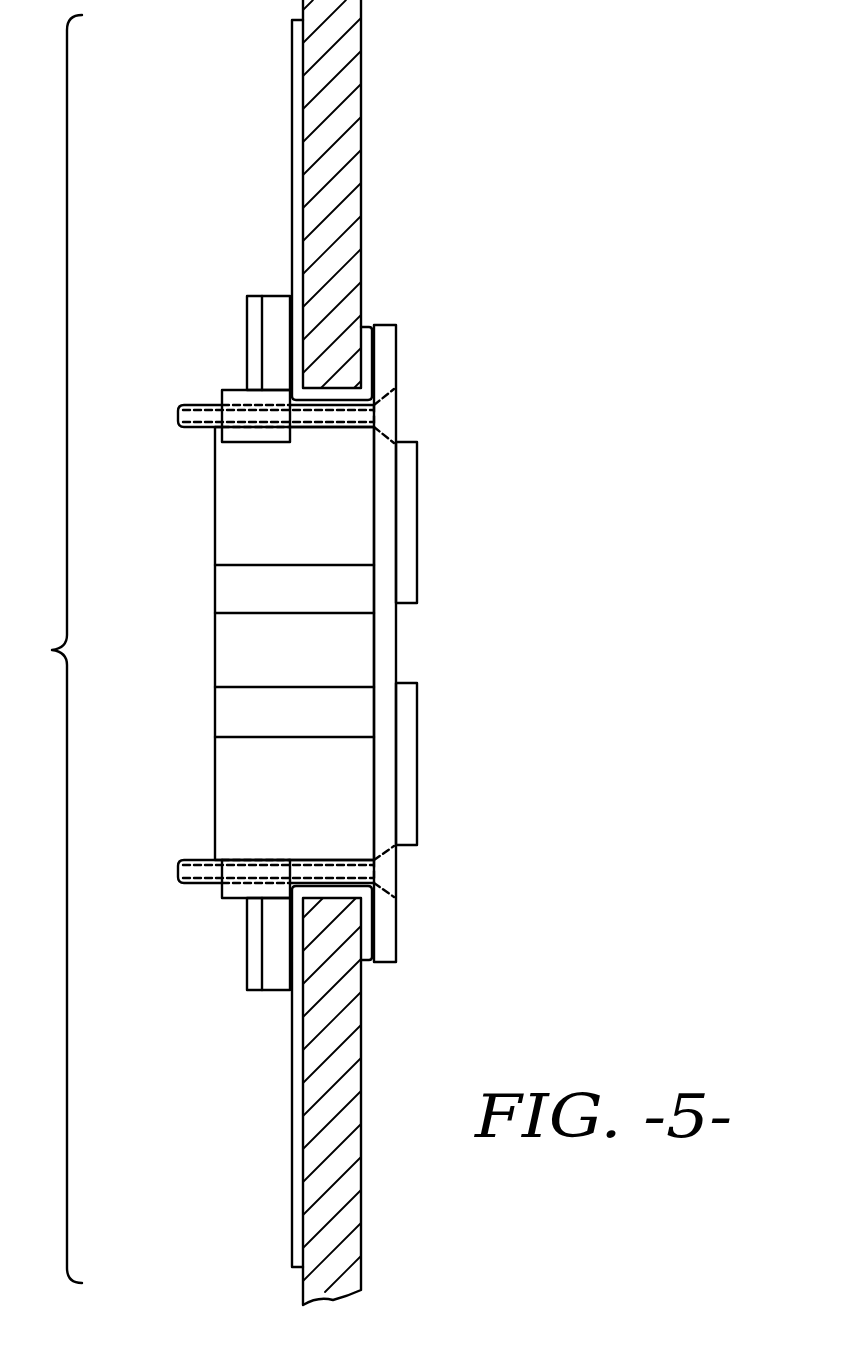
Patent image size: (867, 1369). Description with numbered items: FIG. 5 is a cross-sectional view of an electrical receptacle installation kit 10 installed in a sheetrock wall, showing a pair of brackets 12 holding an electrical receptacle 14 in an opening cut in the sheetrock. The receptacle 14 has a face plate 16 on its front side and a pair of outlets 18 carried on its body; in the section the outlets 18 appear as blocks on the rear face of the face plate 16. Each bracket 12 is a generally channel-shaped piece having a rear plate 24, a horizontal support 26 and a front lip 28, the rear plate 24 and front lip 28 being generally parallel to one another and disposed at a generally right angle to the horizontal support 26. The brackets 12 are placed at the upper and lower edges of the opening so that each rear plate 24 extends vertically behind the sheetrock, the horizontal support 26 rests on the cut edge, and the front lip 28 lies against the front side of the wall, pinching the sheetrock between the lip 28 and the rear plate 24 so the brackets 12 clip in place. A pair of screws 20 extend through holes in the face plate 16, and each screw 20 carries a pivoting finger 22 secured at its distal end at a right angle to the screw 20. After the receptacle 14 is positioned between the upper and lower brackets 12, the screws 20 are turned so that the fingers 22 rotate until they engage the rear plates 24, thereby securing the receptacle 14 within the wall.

The electrical receptacle installation kit 10 is at (47, 649).
The bracket 12 is at (300, 68).
The electrical receptacle 14 is at (243, 490).
The face plate 16 is at (385, 355).
The outlet 18 is at (407, 497).
The screw 20 is at (203, 413).
The pivoting finger 22 is at (275, 312).
The rear plate 24 is at (292, 176).
The horizontal support 26 is at (332, 392).
The front lip 28 is at (365, 327).